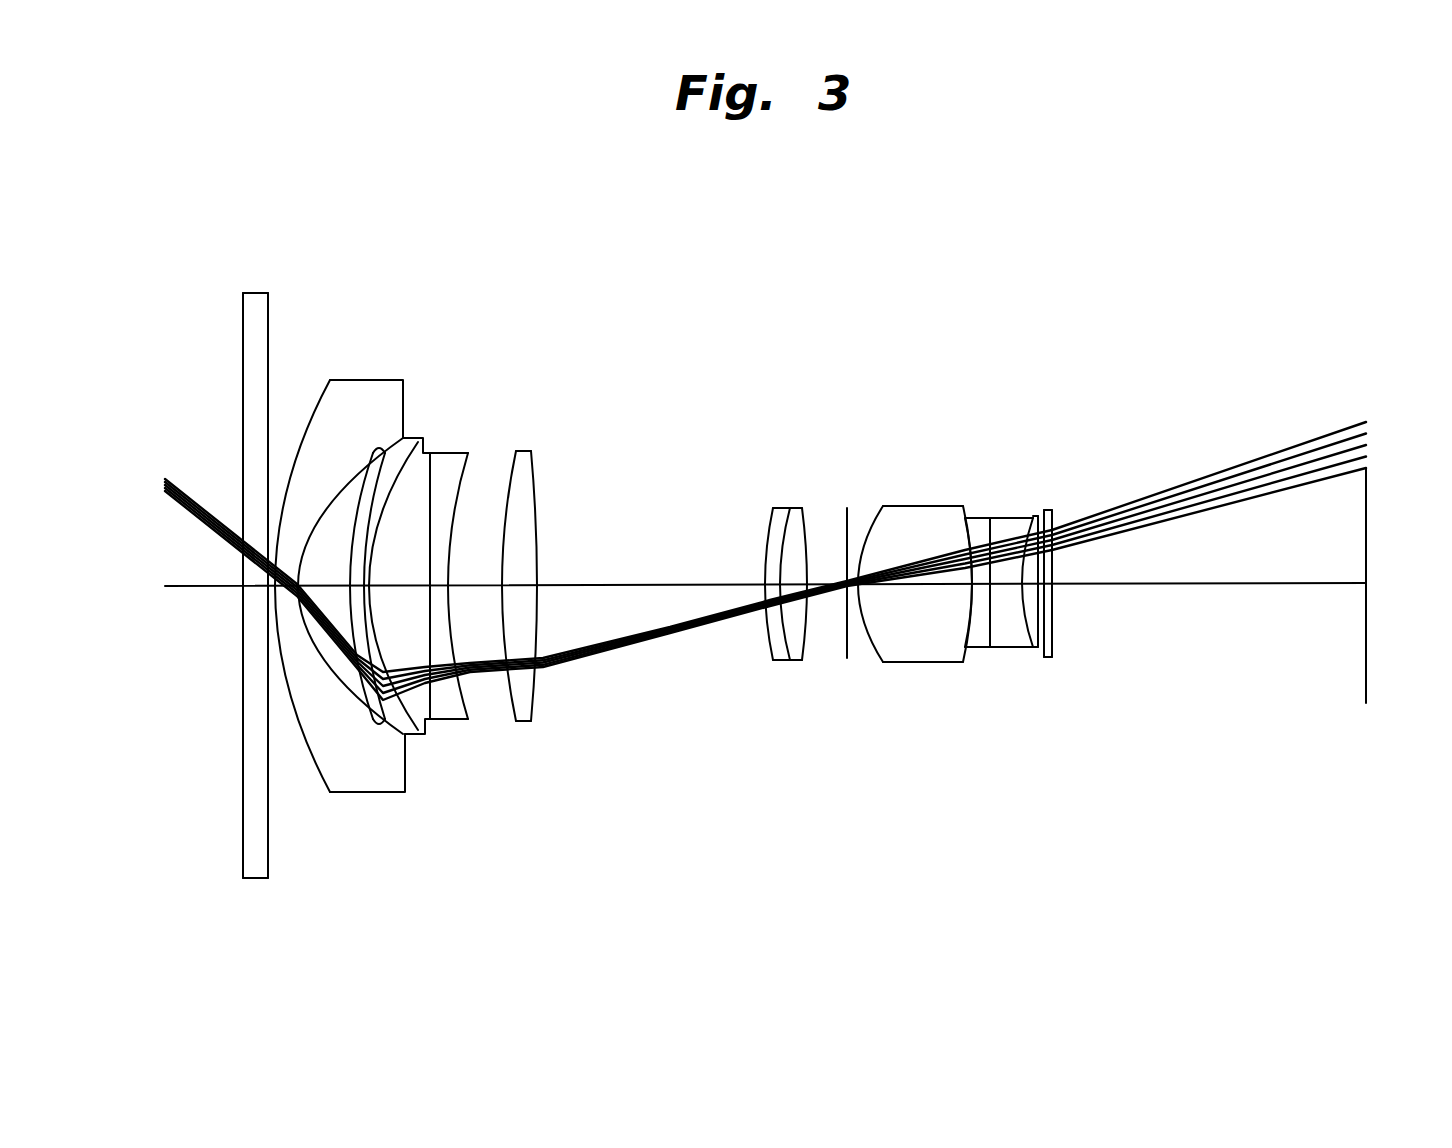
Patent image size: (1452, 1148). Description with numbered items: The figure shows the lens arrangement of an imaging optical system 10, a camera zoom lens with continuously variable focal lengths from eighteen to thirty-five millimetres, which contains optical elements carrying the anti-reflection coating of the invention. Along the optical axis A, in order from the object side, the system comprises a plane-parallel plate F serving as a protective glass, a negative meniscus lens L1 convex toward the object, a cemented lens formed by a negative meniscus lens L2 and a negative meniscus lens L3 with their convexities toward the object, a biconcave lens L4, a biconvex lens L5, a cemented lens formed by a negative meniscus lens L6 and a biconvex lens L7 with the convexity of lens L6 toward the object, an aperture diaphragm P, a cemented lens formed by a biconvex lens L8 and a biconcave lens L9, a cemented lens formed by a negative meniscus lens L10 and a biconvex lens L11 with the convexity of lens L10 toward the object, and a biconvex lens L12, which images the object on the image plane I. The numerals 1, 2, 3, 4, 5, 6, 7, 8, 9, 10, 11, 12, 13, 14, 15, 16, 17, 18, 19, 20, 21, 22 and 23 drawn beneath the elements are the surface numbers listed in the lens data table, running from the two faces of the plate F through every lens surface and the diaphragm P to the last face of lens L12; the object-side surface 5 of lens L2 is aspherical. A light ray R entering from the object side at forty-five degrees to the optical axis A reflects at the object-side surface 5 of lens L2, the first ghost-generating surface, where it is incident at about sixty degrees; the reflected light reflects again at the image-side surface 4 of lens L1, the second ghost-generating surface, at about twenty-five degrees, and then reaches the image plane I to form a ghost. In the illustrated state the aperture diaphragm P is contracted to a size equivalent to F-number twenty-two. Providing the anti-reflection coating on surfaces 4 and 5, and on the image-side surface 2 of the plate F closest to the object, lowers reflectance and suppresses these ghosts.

The surface number 1 (object-side surface of plane-parallel plate F) 1 is at (243, 858).
The surface number 2 (image-side surface of plane-parallel plate F) 2 is at (268, 860).
The surface number 3 (object-side surface of lens L1) 3 is at (319, 772).
The surface number 4 (image-side surface of lens L1, second ghost-generating surface 4 is at (370, 740).
The surface number 5 (object-side surface of lens L2, first ghost-generating surface 5 is at (375, 733).
The surface number 6 (cemented surface of lenses L2 and L3) 6 is at (403, 790).
The surface number 7 (image-side surface of lens L3) 7 is at (407, 732).
The surface number 8 (object-side surface of lens L4) 8 is at (430, 714).
The surface number 9 (image-side surface of lens L4) 9 is at (467, 714).
The imaging optical system 10 is at (513, 714).
The surface number 11 (image-side surface of lens L5) 11 is at (537, 706).
The surface number 12 (object-side surface of lens L6) 12 is at (770, 651).
The surface number 13 (cemented surface of lenses L6 and L7) 13 is at (781, 661).
The surface number 14 (image-side surface of lens L7) 14 is at (805, 649).
The surface number 15 (aperture diaphragm surface) 15 is at (847, 659).
The surface number 16 (object-side surface of lens L8) 16 is at (869, 644).
The surface number 17 (cemented surface of lenses L8 and L9) 17 is at (967, 641).
The surface number 18 (image-side surface of lens L9) 18 is at (987, 648).
The surface number 19 (object-side surface of lens L10) 19 is at (992, 648).
The surface number 20 (cemented surface of lenses L10 and L11) 20 is at (1008, 648).
The surface number 21 (image-side surface of lens L11) 21 is at (1040, 648).
The surface number 22 (object-side surface of lens L12) 22 is at (1052, 650).
The surface number 23 (image-side surface of lens L12) 23 is at (1056, 635).
The plane-parallel plate F is at (255, 293).
The light ray R is at (166, 478).
The optical axis A is at (186, 590).
The aperture diaphragm P is at (847, 508).
The image plane I is at (1368, 467).
The negative meniscus lens L1 is at (330, 380).
The negative meniscus lens L2 is at (374, 452).
The negative meniscus lens L3 is at (411, 442).
The biconcave lens L4 is at (446, 455).
The biconvex lens L5 is at (525, 452).
The negative meniscus lens L6 is at (773, 508).
The biconvex lens L7 is at (795, 508).
The biconvex lens L8 is at (915, 506).
The biconcave lens L9 is at (977, 518).
The negative meniscus lens L10 is at (1012, 518).
The biconvex lens L11 is at (1035, 510).
The biconvex lens L12 is at (1048, 510).